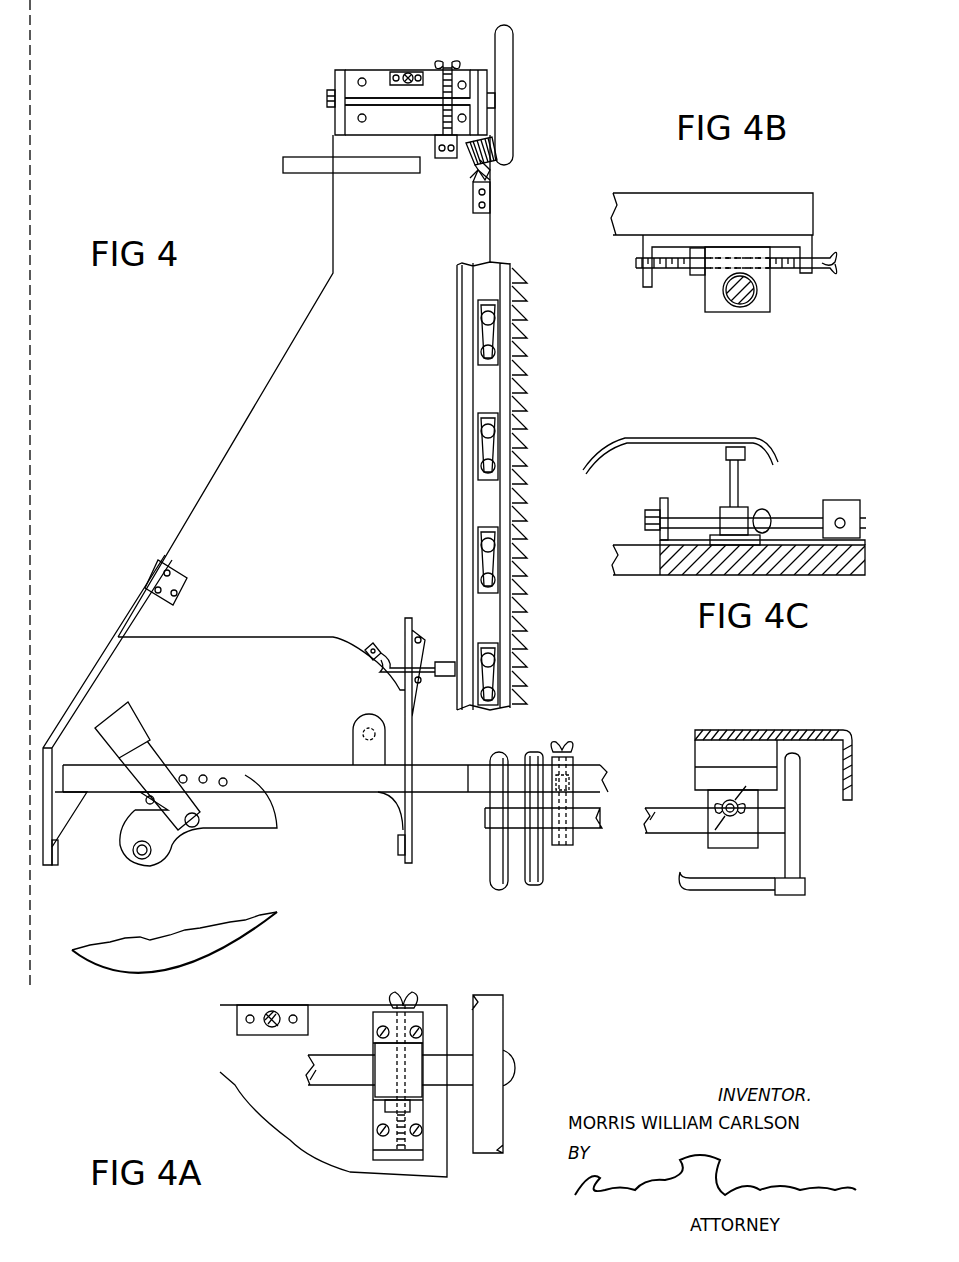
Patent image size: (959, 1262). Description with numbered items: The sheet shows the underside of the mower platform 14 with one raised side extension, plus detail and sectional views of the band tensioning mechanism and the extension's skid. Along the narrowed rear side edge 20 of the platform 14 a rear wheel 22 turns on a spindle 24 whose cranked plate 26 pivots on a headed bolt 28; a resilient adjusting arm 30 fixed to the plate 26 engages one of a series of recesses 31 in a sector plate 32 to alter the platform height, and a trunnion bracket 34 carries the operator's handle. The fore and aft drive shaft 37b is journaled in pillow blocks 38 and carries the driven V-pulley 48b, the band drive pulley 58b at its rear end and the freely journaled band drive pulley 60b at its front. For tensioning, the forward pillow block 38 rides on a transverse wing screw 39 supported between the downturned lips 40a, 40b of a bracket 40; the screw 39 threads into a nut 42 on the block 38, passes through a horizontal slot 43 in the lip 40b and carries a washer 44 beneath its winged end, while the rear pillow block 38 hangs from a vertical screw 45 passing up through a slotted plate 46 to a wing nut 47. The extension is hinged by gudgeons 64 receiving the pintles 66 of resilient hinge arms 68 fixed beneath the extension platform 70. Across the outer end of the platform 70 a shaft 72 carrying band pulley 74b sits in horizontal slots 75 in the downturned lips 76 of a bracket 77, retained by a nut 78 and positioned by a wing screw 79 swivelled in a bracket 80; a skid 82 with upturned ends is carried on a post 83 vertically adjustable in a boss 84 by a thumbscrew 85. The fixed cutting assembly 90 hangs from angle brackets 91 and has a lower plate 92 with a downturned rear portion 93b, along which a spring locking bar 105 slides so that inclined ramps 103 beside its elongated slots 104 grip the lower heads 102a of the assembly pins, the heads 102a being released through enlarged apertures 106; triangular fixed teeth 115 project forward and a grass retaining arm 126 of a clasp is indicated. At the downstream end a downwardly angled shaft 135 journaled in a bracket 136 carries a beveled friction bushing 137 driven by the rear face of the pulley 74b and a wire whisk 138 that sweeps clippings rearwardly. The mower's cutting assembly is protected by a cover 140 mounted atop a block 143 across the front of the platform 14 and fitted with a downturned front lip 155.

In FIG. 4, the platform 14 is at (603, 768).
In FIG. 4B, the platform 14 is at (726, 194).
In FIG. 4A, the platform 14 is at (272, 1074).
In FIG. 4, the rear side edges 20 is at (323, 765).
In FIG. 4, the rear wheels 22 is at (205, 933).
In FIG. 4, the spindle 24 is at (150, 856).
In FIG. 4, the plate 26 is at (132, 866).
In FIG. 4, the headed bolt 28 is at (194, 828).
In FIG. 4, the adjusting arm 30 is at (160, 757).
In FIG. 4, the recesses 31 is at (222, 778).
In FIG. 4, the sector plate 32 is at (247, 828).
In FIG. 4, the trunnion brackets 34 is at (360, 720).
In FIG. 4, the drive shaft 37b is at (588, 830).
In FIG. 4B, the drive shaft 37b is at (736, 305).
In FIG. 4A, the drive shaft 37b is at (322, 1088).
In FIG. 4, the pillow blocks 38 is at (563, 847).
In FIG. 4B, the pillow blocks 38 is at (759, 313).
In FIG. 4A, the pillow blocks 38 is at (378, 1053).
In FIG. 4, the wing screw 39 is at (735, 816).
In FIG. 4B, the wing screw 39 is at (672, 270).
In FIG. 4A, the wing screw 39 is at (400, 1000).
In FIG. 4B, the bracket 40 is at (736, 241).
In FIG. 4A, the bracket 40 is at (420, 1120).
In FIG. 4B, the lip 40a is at (644, 288).
In FIG. 4A, the lip 40a is at (378, 1155).
In FIG. 4, the lip 40b is at (708, 802).
In FIG. 4B, the lip 40b is at (800, 283).
In FIG. 4A, the lip 40b is at (373, 1020).
In FIG. 4B, the nut 42 is at (696, 276).
In FIG. 4A, the nut 42 is at (385, 1106).
In FIG. 4, the horizontal slot 43 is at (742, 805).
In FIG. 4A, the horizontal slot 43 is at (418, 1005).
In FIG. 4, the washer 44 is at (736, 800).
In FIG. 4B, the washer 44 is at (816, 246).
In FIG. 4A, the washer 44 is at (386, 1004).
In FIG. 4, the vertical screw 45 is at (578, 770).
In FIG. 4, the plate 46 is at (576, 760).
In FIG. 4, the wing nut 47 is at (558, 745).
In FIG. 4, the driven V-pulley 48b is at (536, 886).
In FIG. 4, the band drive pulley 58b is at (490, 868).
In FIG. 4, the band drive pulley 60b is at (802, 855).
In FIG. 4A, the band drive pulley 60b is at (505, 1020).
In FIG. 4, the gudgeons 64 is at (75, 815).
In FIG. 4, the pintles 66 is at (57, 860).
In FIG. 4, the hinge arms 68 is at (95, 676).
In FIG. 4, the platform 70 is at (303, 517).
In FIG. 4C, the platform 70 is at (684, 576).
In FIG. 4, the shaft 72 is at (355, 97).
In FIG. 4C, the shaft 72 is at (690, 518).
In FIG. 4, the band pulley 74b is at (511, 52).
In FIG. 4, the horizontal slots 75 is at (335, 82).
In FIG. 4, the lips 76 is at (336, 122).
In FIG. 4C, the lips 76 is at (660, 504).
In FIG. 4, the brackets 77 is at (375, 72).
In FIG. 4C, the brackets 77 is at (660, 542).
In FIG. 4, the nuts 78 is at (327, 100).
In FIG. 4C, the nuts 78 is at (646, 520).
In FIG. 4, the wing screws 79 is at (450, 62).
In FIG. 4, the brackets 80 is at (441, 158).
In FIG. 4C, the brackets 80 is at (839, 502).
In FIG. 4, the skids 82 is at (295, 157).
In FIG. 4C, the skids 82 is at (672, 440).
In FIG. 4C, the posts 83 is at (729, 474).
In FIG. 4C, the bosses 84 is at (742, 509).
In FIG. 4C, the thumbscrews 85 is at (766, 516).
In FIG. 4, the cutting assembly 90 is at (806, 884).
In FIG. 4, the angle brackets 91 is at (695, 918).
In FIG. 4A, the angle brackets 91 is at (270, 1005).
In FIG. 4, the lower plate 92 is at (515, 276).
In FIG. 4, the downturned rear portion 93b is at (457, 498).
In FIG. 4, the lower head 102a is at (500, 322).
In FIG. 4, the inclined ramps 103 is at (500, 420).
In FIG. 4, the elongated slots 104 is at (478, 337).
In FIG. 4, the locking bar 105 is at (505, 501).
In FIG. 4, the enlarged apertures 106 is at (496, 352).
In FIG. 4, the fixed teeth 115 is at (527, 548).
In FIG. 4, the grass retaining arm 126 is at (171, 368).
In FIG. 4, the shafts 135 is at (510, 188).
In FIG. 4, the brackets 136 is at (473, 207).
In FIG. 4, the friction bushings 137 is at (497, 150).
In FIG. 4, the wire whisks 138 is at (491, 172).
In FIG. 4, the cover 140 is at (742, 730).
In FIG. 4, the block 143 is at (720, 785).
In FIG. 4, the downturned lip 155 is at (840, 762).